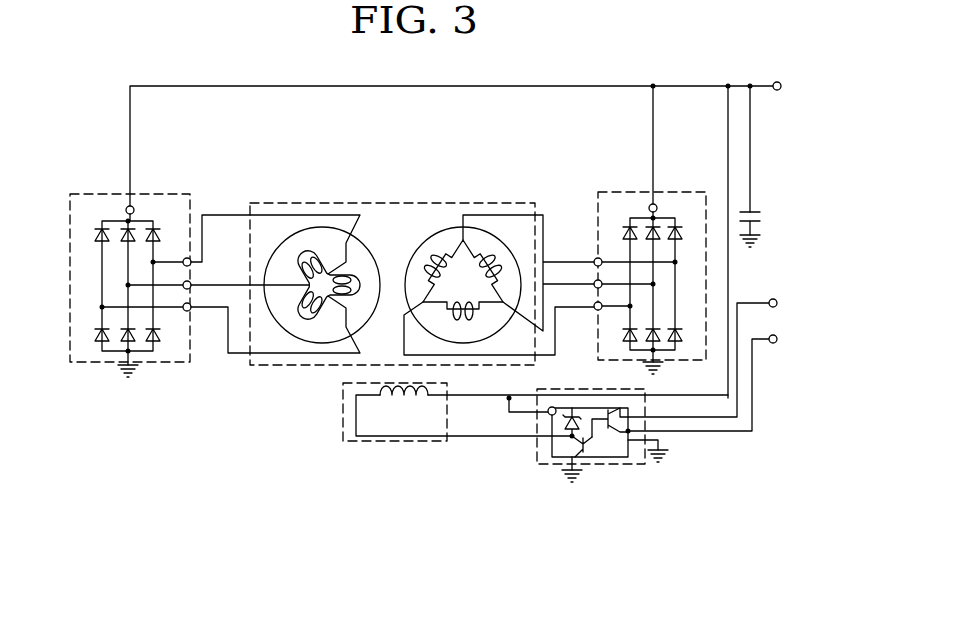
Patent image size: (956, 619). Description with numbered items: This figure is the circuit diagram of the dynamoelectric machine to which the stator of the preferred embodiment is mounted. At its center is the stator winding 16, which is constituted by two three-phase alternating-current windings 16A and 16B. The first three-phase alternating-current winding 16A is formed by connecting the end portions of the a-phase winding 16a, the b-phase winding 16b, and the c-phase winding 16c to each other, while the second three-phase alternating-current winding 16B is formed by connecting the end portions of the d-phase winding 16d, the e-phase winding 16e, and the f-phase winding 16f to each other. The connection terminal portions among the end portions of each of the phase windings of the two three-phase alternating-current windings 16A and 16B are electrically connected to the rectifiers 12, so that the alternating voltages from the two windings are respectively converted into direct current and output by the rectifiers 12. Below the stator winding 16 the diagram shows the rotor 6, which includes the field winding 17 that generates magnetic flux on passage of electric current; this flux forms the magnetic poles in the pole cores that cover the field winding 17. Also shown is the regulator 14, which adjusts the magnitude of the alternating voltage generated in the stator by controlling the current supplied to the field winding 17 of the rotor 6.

The rectifiers 12 is at (160, 193).
The stator winding 16 is at (392, 300).
The three-phase alternating-current winding 16A is at (491, 316).
The three-phase alternating-current winding 16B is at (311, 284).
The a-phase winding 16a is at (495, 258).
The b-phase winding 16b is at (463, 322).
The c-phase winding 16c is at (436, 256).
The d-phase winding 16d is at (357, 270).
The e-phase winding 16e is at (305, 312).
The f-phase winding 16f is at (293, 258).
The rotor 6 is at (519, 439).
The field winding 17 is at (400, 412).
The regulator 14 is at (532, 456).